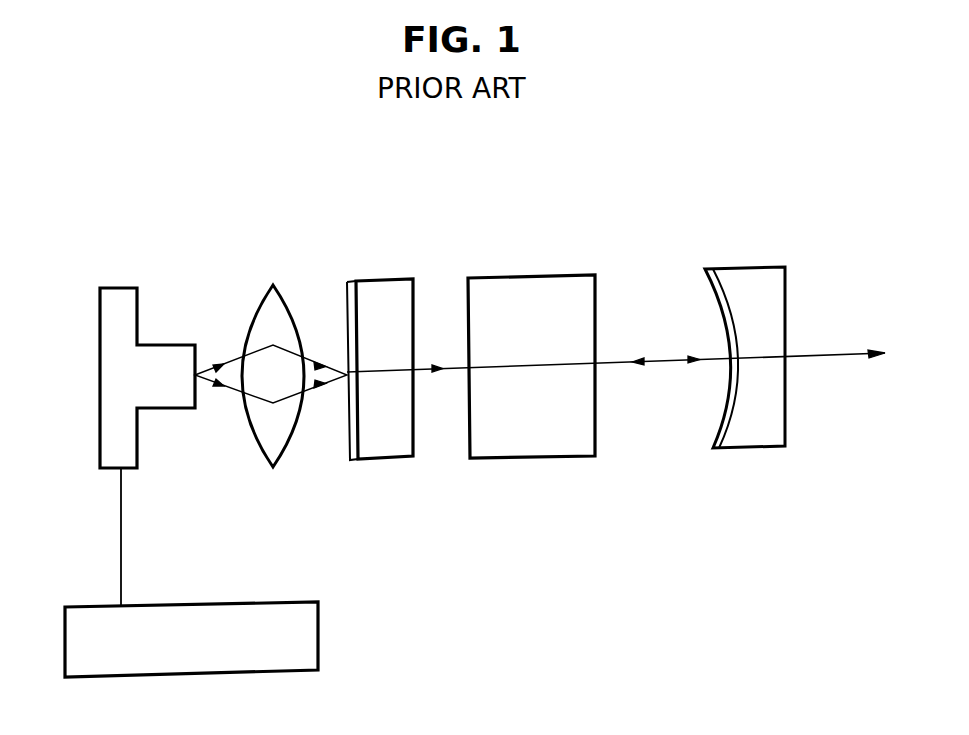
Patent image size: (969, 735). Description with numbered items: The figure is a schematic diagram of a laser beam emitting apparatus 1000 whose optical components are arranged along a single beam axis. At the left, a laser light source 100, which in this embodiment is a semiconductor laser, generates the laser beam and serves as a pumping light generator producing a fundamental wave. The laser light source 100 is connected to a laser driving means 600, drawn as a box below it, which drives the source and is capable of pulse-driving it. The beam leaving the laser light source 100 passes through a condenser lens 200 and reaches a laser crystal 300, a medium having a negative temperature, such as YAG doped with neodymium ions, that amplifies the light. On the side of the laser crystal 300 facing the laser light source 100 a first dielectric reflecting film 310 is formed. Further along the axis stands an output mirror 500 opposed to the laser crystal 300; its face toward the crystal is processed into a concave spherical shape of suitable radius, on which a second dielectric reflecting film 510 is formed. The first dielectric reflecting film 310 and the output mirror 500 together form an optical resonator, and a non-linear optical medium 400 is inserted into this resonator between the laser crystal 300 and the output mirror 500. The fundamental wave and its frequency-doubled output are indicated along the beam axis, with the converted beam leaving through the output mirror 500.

The laser light source 100 is at (118, 288).
The condenser lens 200 is at (287, 297).
The laser crystal 300 is at (380, 300).
The first dielectric reflecting film 310 is at (347, 428).
The non-linear optical medium 400 is at (528, 290).
The output mirror 500 is at (747, 272).
The second dielectric reflecting film 510 is at (710, 425).
The laser driving means 600 is at (263, 602).
The laser beam emitting apparatus 1000 is at (559, 576).